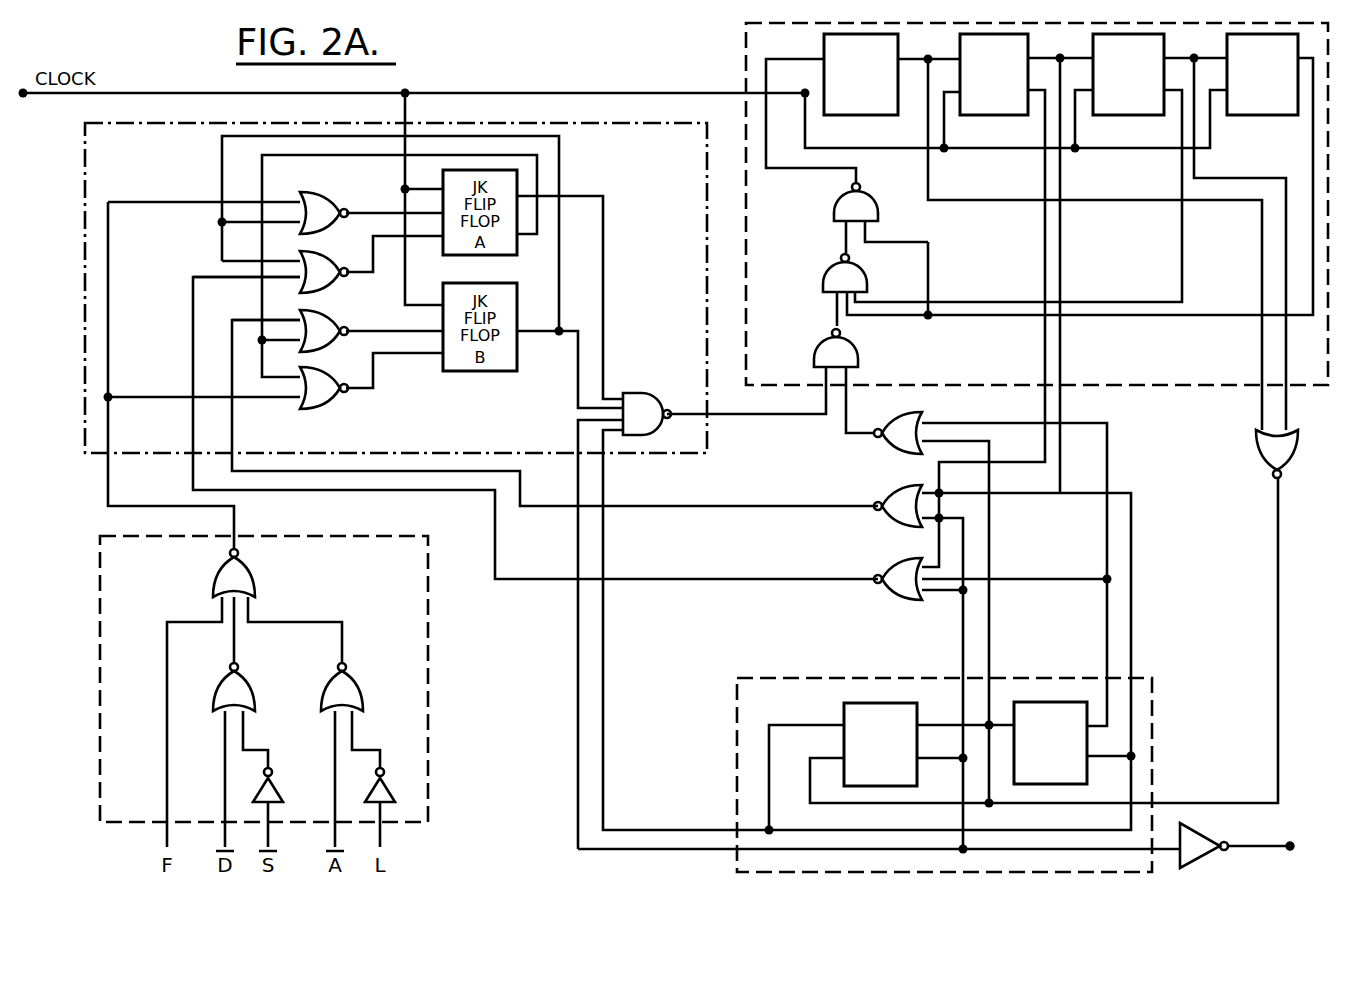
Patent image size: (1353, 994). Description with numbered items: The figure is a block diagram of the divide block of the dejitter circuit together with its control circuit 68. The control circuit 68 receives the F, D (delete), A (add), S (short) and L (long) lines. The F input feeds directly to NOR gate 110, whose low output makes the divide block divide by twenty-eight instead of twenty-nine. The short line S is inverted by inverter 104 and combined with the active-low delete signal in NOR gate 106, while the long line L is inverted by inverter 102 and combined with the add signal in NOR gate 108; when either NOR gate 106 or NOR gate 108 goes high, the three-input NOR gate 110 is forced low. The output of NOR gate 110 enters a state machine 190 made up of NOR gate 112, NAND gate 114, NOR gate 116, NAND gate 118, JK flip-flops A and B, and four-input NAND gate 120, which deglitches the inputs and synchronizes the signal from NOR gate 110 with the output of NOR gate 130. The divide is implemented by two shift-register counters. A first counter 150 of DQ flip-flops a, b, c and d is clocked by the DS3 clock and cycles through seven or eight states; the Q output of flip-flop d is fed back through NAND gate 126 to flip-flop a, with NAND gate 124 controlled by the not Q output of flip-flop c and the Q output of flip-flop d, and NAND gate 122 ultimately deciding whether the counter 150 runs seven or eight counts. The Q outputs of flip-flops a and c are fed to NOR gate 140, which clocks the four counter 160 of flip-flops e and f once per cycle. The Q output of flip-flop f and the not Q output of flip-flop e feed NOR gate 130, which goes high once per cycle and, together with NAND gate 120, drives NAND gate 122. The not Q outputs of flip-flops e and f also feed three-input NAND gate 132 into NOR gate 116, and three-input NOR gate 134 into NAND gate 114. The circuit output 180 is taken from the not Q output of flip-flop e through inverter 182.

The control circuit 68 is at (430, 692).
The inverter 102 is at (392, 795).
The inverter 104 is at (272, 792).
The NOR gate 106 is at (256, 677).
The NOR gate 108 is at (353, 681).
The NOR gate 110 is at (259, 575).
The NOR gate 112 is at (331, 194).
The NAND gate 114 is at (326, 290).
The NOR gate 116 is at (326, 314).
The NAND gate 118 is at (330, 405).
The four-input NAND gate 120 is at (648, 392).
The NAND gate 122 is at (822, 343).
The NAND gate 124 is at (830, 266).
The NAND gate 126 is at (835, 205).
The NOR gate 130 is at (888, 447).
The three-input NAND gate 132 is at (888, 521).
The three-input NOR gate 134 is at (892, 598).
The NOR gate 140 is at (1252, 445).
The first counter 150 is at (745, 34).
The four counter 160 is at (1155, 715).
The circuit output 180 is at (1292, 840).
The inverter 182 is at (1205, 823).
The state machine 190 is at (85, 260).